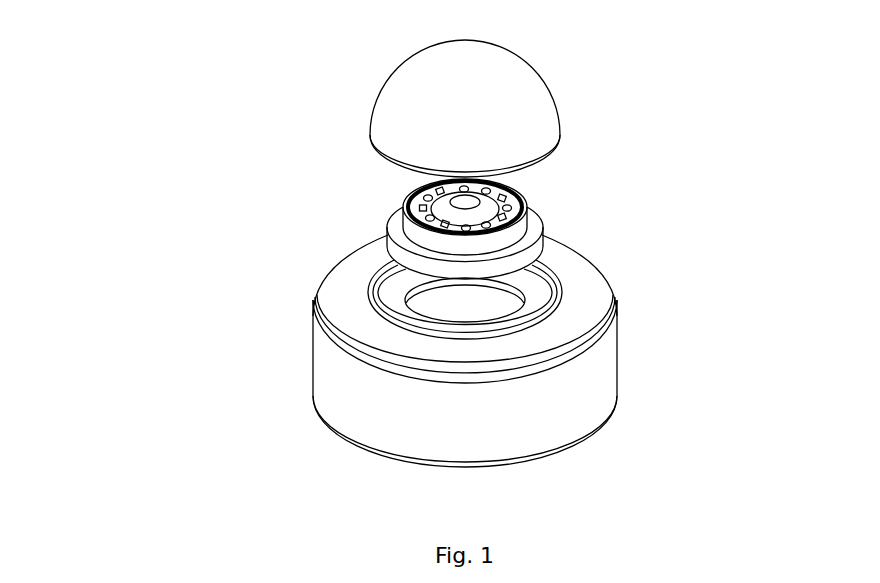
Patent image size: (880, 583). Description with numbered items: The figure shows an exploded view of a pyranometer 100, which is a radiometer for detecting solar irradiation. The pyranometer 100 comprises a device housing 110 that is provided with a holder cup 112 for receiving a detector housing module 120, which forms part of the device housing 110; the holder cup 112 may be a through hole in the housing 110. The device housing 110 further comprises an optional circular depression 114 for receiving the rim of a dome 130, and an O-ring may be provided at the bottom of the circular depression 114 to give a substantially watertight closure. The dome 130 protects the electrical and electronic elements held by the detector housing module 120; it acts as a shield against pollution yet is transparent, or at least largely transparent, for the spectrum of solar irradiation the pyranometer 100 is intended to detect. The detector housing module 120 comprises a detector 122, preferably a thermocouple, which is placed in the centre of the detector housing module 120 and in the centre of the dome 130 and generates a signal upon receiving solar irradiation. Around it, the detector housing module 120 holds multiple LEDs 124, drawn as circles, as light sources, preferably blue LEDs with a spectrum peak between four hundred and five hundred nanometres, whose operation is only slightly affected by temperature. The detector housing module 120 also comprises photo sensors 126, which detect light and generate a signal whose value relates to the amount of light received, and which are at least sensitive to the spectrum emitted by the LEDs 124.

The pyranometer 100 is at (65, 32).
The device housing 110 is at (343, 407).
The holder cup 112 is at (438, 307).
The circular depression 114 is at (386, 294).
The detector housing module 120 is at (420, 248).
The detector 122 is at (468, 200).
The LEDs 124 is at (523, 202).
The photo sensors 126 is at (458, 237).
The dome 130 is at (403, 87).